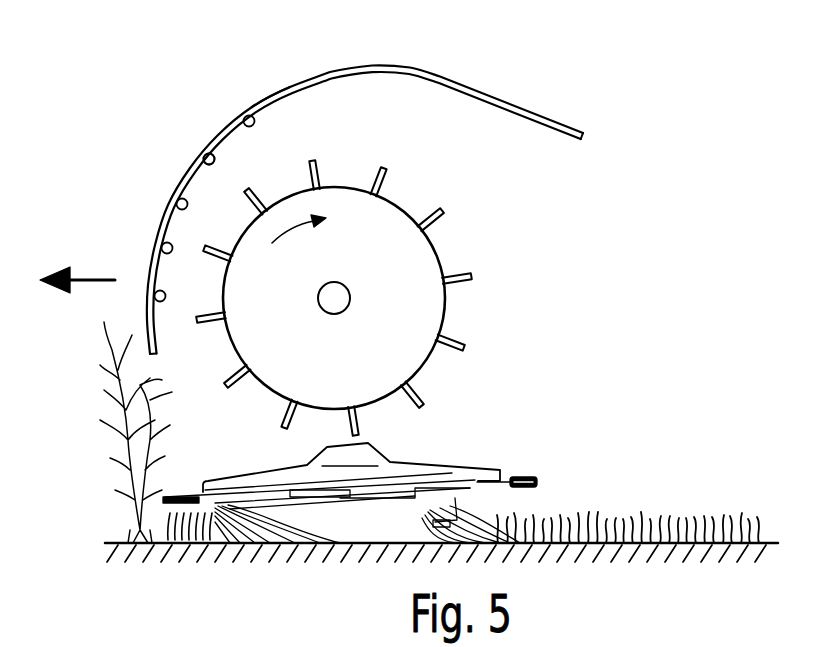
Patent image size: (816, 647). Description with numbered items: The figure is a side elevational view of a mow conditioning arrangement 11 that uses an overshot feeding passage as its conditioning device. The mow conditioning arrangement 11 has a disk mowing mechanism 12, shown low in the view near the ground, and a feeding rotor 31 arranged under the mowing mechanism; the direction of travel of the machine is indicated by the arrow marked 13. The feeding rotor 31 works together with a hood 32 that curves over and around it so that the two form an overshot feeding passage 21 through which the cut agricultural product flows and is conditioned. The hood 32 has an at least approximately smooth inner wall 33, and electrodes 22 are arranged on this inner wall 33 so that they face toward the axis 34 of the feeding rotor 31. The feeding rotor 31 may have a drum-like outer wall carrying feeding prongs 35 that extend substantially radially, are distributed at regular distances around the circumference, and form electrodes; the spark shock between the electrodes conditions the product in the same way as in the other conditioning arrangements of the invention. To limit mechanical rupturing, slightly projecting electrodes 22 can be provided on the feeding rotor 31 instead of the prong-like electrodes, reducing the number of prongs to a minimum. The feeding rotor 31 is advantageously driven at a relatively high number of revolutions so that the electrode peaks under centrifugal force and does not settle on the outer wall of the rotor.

The mow conditioning arrangement 11 is at (665, 137).
The disk mowing mechanism 12 is at (482, 450).
The direction of travel 13 is at (157, 193).
The overshot feeding passage 21 is at (323, 113).
The electrodes 22 is at (208, 154).
The feeding rotor 31 is at (525, 200).
The hood 32 is at (276, 96).
The inner wall 33 is at (226, 136).
The axis 34 is at (345, 297).
The pins / tines on drum 35 is at (398, 140).